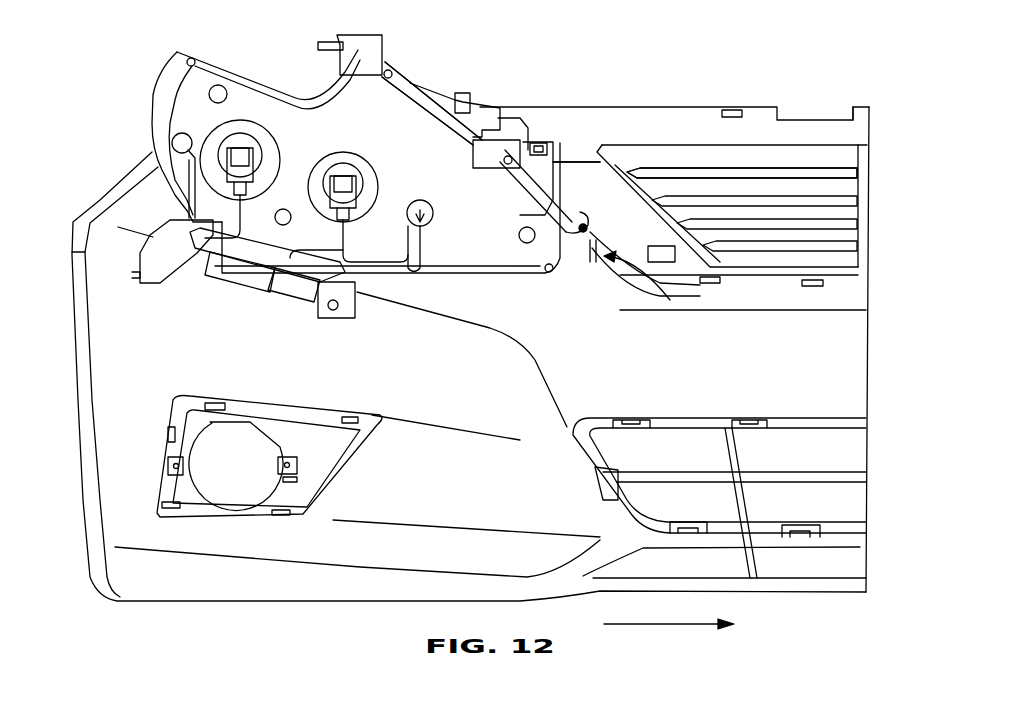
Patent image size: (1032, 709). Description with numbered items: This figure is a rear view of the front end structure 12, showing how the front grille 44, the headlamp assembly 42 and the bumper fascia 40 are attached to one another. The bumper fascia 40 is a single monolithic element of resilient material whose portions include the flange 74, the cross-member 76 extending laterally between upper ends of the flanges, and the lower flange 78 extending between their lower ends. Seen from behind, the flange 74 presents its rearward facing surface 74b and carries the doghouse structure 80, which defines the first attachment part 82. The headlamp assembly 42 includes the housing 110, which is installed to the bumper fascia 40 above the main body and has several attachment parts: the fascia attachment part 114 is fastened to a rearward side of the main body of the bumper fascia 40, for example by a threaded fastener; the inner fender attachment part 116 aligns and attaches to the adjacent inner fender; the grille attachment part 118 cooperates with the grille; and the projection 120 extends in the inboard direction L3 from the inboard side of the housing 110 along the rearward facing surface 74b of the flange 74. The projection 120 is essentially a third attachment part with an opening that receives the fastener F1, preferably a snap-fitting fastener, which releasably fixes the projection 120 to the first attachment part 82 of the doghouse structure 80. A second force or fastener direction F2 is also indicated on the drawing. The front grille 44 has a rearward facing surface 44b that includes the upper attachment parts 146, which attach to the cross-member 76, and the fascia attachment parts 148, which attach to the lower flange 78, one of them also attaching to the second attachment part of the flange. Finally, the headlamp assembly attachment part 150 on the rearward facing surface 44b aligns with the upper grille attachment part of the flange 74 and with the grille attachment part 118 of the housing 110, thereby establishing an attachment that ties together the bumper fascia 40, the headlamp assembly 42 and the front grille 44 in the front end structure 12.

The vehicle front end assembly 12 is at (798, 48).
The bumper fascia 40 is at (828, 352).
The headlamp assembly 42 is at (262, 78).
The front grille 44 is at (808, 157).
The rearward facing surface 44b is at (683, 157).
The flange 74 is at (588, 170).
The rearward facing surface 74b is at (572, 165).
The cross-member 76 is at (855, 128).
The lower flange 78 is at (850, 284).
The doghouse structure 80 is at (640, 283).
The first attachment part 82 is at (660, 240).
The housing 110 is at (395, 135).
The fascia attachment part 114 is at (342, 300).
The inner fender attachment part 116 is at (163, 258).
The grille attachment part 118 is at (548, 172).
The projection 120 is at (583, 232).
The upper attachment parts 146 is at (730, 108).
The fascia attachment parts 148 is at (800, 284).
The headlamp assembly attachment part 150 is at (505, 150).
The fastener F1 is at (600, 228).
The force F2 is at (537, 142).
The inboard direction L3 is at (686, 626).